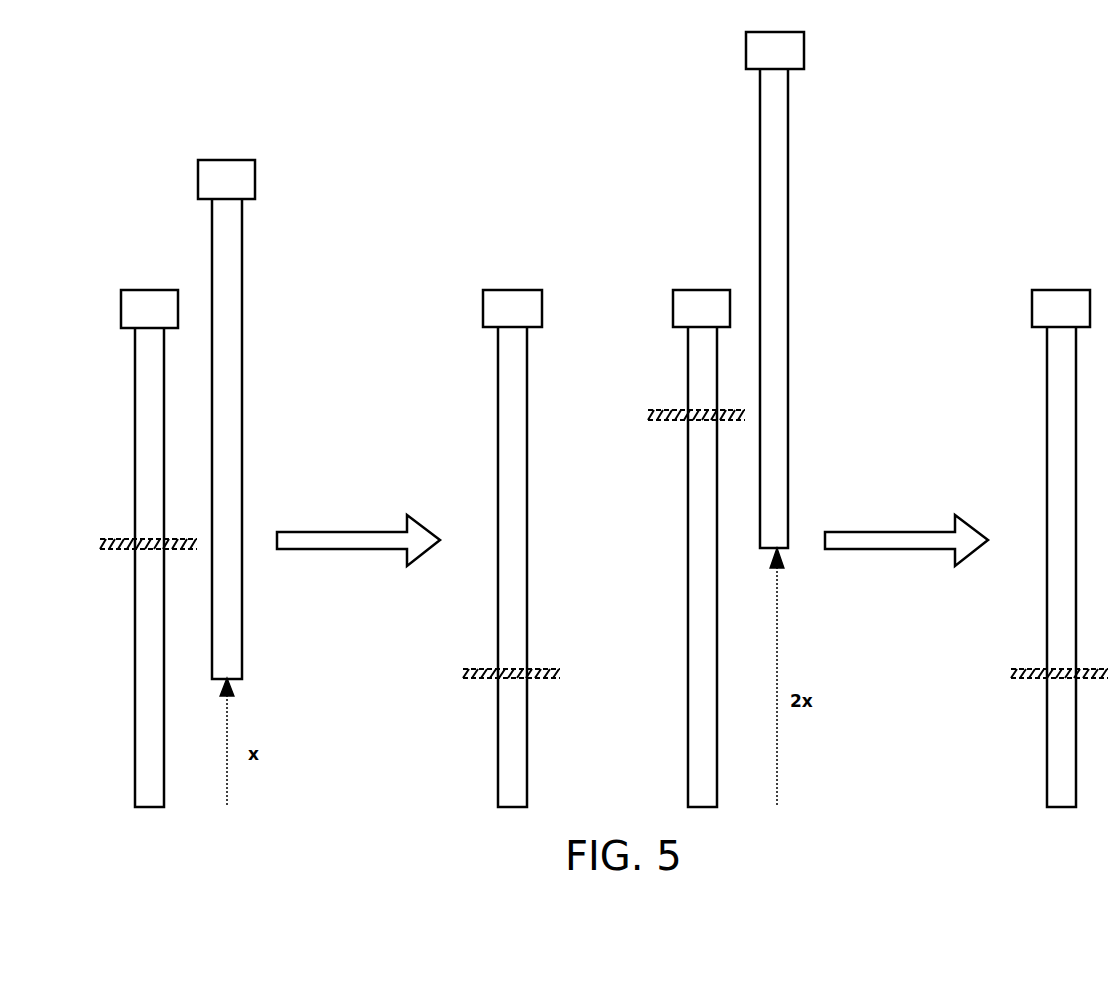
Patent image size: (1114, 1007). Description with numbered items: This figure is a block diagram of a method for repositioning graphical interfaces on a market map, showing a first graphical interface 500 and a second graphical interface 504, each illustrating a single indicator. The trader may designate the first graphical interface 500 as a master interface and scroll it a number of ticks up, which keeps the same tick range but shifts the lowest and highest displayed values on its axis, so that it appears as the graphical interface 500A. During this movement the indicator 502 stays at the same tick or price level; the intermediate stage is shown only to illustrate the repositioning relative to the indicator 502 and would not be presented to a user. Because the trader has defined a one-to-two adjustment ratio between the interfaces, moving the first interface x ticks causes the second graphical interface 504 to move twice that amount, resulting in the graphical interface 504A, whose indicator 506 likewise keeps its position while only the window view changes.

The first graphical interface 500 is at (152, 290).
The indicator 502 is at (113, 539).
The graphical interface after repositioning 500A is at (514, 290).
The second graphical interface 504 is at (705, 290).
The marked region on second screw shaft 506 is at (649, 410).
The repositioned second graphical interface 504A is at (1064, 290).